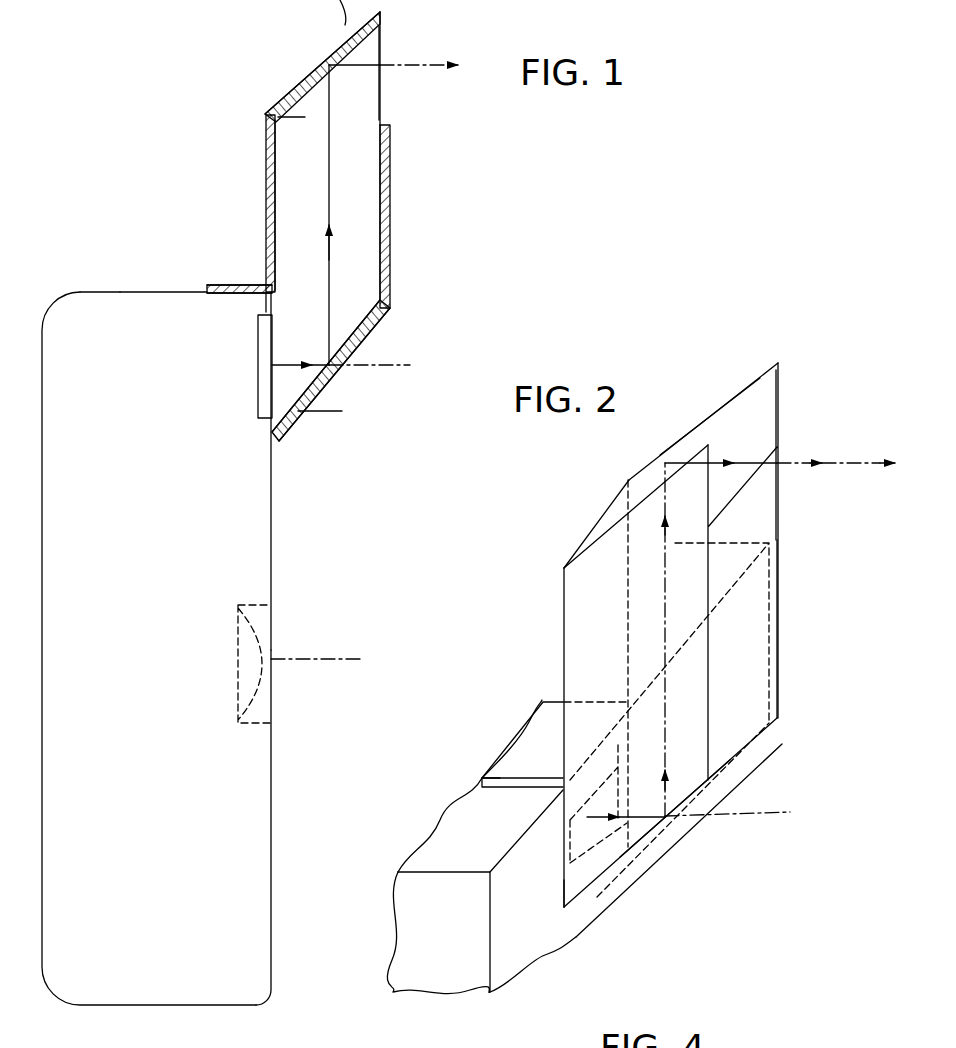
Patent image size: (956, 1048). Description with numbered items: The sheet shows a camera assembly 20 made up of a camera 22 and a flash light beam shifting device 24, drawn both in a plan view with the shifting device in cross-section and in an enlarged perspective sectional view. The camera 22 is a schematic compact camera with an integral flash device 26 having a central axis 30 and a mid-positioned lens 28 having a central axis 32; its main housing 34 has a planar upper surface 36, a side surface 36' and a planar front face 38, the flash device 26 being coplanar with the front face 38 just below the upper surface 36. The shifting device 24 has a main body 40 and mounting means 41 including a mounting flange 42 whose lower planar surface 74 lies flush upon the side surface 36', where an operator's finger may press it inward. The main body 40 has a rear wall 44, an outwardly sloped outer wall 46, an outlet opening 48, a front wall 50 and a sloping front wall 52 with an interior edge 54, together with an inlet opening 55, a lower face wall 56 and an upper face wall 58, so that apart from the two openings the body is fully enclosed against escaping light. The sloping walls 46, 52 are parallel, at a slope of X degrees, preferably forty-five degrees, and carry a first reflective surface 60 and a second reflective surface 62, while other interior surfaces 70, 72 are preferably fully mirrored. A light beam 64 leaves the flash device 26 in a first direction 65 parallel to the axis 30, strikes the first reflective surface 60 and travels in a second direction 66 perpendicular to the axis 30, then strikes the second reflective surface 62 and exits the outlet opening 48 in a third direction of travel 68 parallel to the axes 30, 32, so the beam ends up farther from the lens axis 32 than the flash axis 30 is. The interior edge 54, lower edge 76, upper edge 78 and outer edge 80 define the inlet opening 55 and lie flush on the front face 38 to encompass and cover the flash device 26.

In FIG. 1, the camera assembly 20 is at (289, 233).
In FIG. 1, the camera 22 is at (197, 610).
In FIG. 2, the camera 22 is at (458, 847).
In FIG. 1, the flash light beam shifting device 24 is at (342, 233).
In FIG. 2, the flash light beam shifting device 24 is at (703, 643).
In FIG. 1, the flash device 26 is at (256, 389).
In FIG. 2, the flash device 26 is at (606, 803).
In FIG. 1, the lens 28 is at (280, 619).
In FIG. 1, the central axis 30 is at (386, 362).
In FIG. 2, the central axis 30 is at (790, 814).
In FIG. 1, the central axis 32 is at (333, 660).
In FIG. 1, the main housing 34 is at (276, 798).
In FIG. 1, the planar upper surface 36 is at (80, 277).
In FIG. 2, the planar upper surface 36 is at (444, 932).
In FIG. 1, the side surface 36' is at (152, 253).
In FIG. 2, the side surface 36' is at (503, 831).
In FIG. 1, the planar front face 38 is at (278, 540).
In FIG. 2, the planar front face 38 is at (498, 952).
In FIG. 1, the main body 40 is at (279, 92).
In FIG. 2, the main body 40 is at (782, 564).
In FIG. 1, the mounting means 41 is at (206, 284).
In FIG. 2, the mounting means 41 is at (488, 769).
In FIG. 1, the mounting flange 42 is at (210, 284).
In FIG. 2, the mounting flange 42 is at (490, 739).
In FIG. 1, the rear wall 44 is at (261, 203).
In FIG. 2, the rear wall 44 is at (588, 693).
In FIG. 2, the outwardly sloped outer wall 46 is at (671, 459).
In FIG. 1, the outlet opening 48 is at (387, 31).
In FIG. 2, the outlet opening 48 is at (768, 571).
In FIG. 1, the front wall 50 is at (397, 216).
In FIG. 2, the front wall 50 is at (726, 667).
In FIG. 1, the sloping front wall 52 is at (336, 373).
In FIG. 2, the sloping front wall 52 is at (678, 827).
In FIG. 1, the interior edge 54 is at (279, 436).
In FIG. 2, the interior edge 54 is at (630, 889).
In FIG. 1, the inlet opening 55 is at (271, 312).
In FIG. 2, the inlet opening 55 is at (586, 817).
In FIG. 1, the lower face wall 56 is at (341, 119).
In FIG. 2, the lower face wall 56 is at (738, 452).
In FIG. 2, the upper face wall 58 is at (576, 640).
In FIG. 1, the first reflective surface 60 is at (361, 328).
In FIG. 2, the first reflective surface 60 is at (745, 762).
In FIG. 1, the second reflective surface 62 is at (318, 71).
In FIG. 2, the second reflective surface 62 is at (750, 405).
In FIG. 1, the light beam 64 is at (327, 250).
In FIG. 2, the light beam 64 is at (790, 462).
In FIG. 1, the first direction 65 is at (283, 362).
In FIG. 1, the second direction 66 is at (330, 186).
In FIG. 1, the third direction of travel 68 is at (418, 65).
In FIG. 2, the third direction of travel 68 is at (855, 462).
In FIG. 1, the interior surface 70 is at (279, 226).
In FIG. 1, the interior surface 72 is at (384, 228).
In FIG. 1, the lower planar surface 74 is at (214, 296).
In FIG. 2, the lower edge 76 is at (630, 795).
In FIG. 2, the upper edge 78 is at (563, 885).
In FIG. 2, the outer edge 80 is at (577, 775).